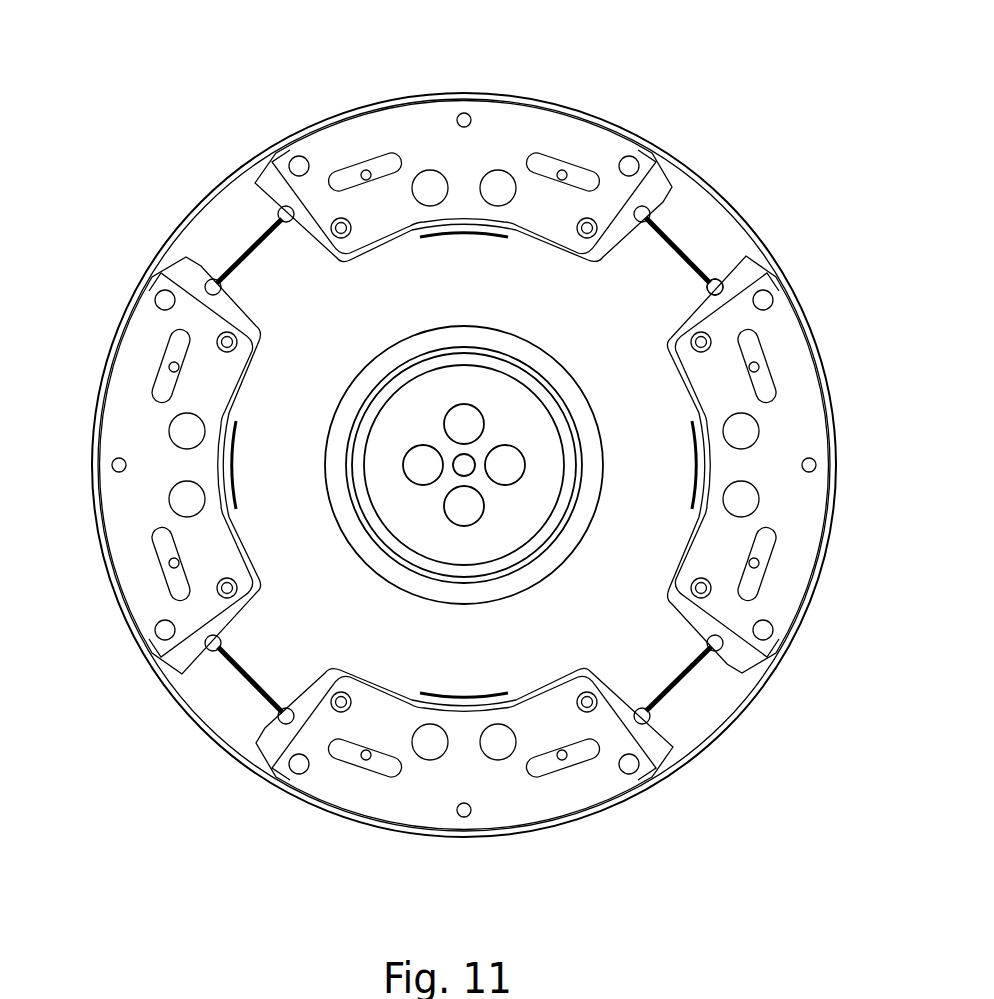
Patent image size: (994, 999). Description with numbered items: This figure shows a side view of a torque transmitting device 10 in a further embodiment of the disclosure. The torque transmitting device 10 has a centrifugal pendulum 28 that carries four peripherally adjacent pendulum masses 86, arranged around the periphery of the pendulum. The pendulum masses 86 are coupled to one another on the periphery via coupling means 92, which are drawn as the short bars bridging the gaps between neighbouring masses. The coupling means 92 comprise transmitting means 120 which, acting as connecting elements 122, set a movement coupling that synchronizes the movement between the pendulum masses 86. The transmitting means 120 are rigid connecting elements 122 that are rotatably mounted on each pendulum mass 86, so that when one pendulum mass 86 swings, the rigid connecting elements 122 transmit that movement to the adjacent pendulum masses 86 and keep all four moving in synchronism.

The torque transmitting device 10 is at (476, 474).
The centrifugal pendulum 28 is at (718, 158).
The pendulum mass 86 is at (330, 100).
The coupling means 92 is at (484, 438).
The transmitting means 120 is at (727, 253).
The connecting element 122 is at (668, 235).